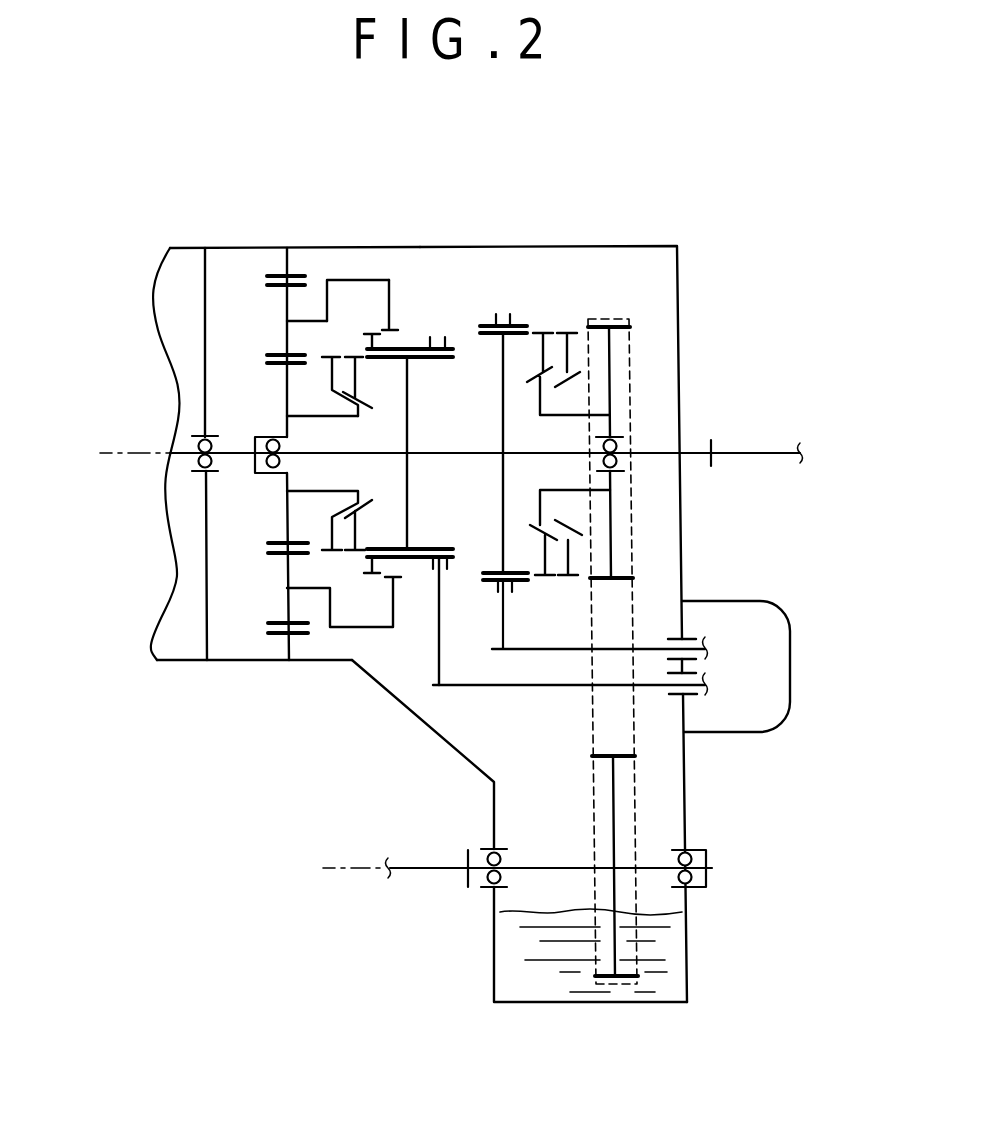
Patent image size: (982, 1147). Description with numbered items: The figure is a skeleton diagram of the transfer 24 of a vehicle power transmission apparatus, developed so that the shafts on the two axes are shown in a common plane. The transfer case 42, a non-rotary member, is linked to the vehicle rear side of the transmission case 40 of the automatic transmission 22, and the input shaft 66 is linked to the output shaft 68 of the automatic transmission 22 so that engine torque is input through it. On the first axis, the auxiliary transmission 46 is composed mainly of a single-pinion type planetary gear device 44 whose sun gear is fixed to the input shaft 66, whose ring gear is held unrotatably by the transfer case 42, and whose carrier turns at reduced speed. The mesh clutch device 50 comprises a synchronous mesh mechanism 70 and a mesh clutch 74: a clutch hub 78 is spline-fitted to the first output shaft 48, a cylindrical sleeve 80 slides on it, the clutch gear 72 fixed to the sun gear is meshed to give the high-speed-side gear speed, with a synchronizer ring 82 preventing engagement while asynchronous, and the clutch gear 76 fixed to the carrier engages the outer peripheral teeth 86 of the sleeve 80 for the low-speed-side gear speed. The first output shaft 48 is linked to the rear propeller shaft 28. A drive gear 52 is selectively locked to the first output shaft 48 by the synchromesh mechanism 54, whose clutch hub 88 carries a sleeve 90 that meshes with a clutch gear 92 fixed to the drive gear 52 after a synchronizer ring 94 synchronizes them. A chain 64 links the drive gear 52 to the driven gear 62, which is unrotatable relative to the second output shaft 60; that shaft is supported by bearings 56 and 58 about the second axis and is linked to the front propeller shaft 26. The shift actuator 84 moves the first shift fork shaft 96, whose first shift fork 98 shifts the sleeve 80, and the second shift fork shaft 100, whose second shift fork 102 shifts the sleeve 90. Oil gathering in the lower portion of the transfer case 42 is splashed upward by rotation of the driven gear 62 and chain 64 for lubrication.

The automatic transmission 22 is at (145, 335).
The transfer 24 is at (738, 287).
The front propeller shaft 26 is at (435, 878).
The rear propeller shaft 28 is at (752, 445).
The transmission case 40 is at (187, 247).
The transfer case 42 is at (607, 245).
The single-pinion type planetary gear device 44 is at (267, 583).
The auxiliary transmission 46 is at (290, 676).
The first output shaft 48 is at (645, 445).
The mesh clutch device 50 is at (400, 645).
The drive gear 52 is at (618, 335).
The synchromesh mechanism 54 is at (535, 615).
The bearing 56 is at (483, 843).
The bearing 58 is at (656, 838).
The second output shaft 60 is at (543, 866).
The driven gear 62 is at (625, 970).
The chain 64 is at (634, 597).
The input shaft 66 is at (233, 458).
The output shaft 68 is at (158, 492).
The synchronous mesh mechanism 70 is at (340, 345).
The clutch gear 72 is at (330, 368).
The mesh clutch 74 is at (380, 315).
The clutch gear 76 is at (397, 300).
The clutch hub 78 is at (407, 413).
The sleeve 80 is at (413, 347).
The synchronizer ring 82 is at (358, 374).
The shift actuator 84 is at (730, 722).
The outer peripheral teeth 86 is at (370, 332).
The clutch hub 88 is at (502, 438).
The sleeve 90 is at (527, 325).
The clutch gear 92 is at (572, 357).
The synchronizer ring 94 is at (522, 495).
The first shift fork shaft 96 is at (453, 688).
The first shift fork 98 is at (442, 640).
The second shift fork shaft 100 is at (570, 646).
The second shift fork 102 is at (503, 632).